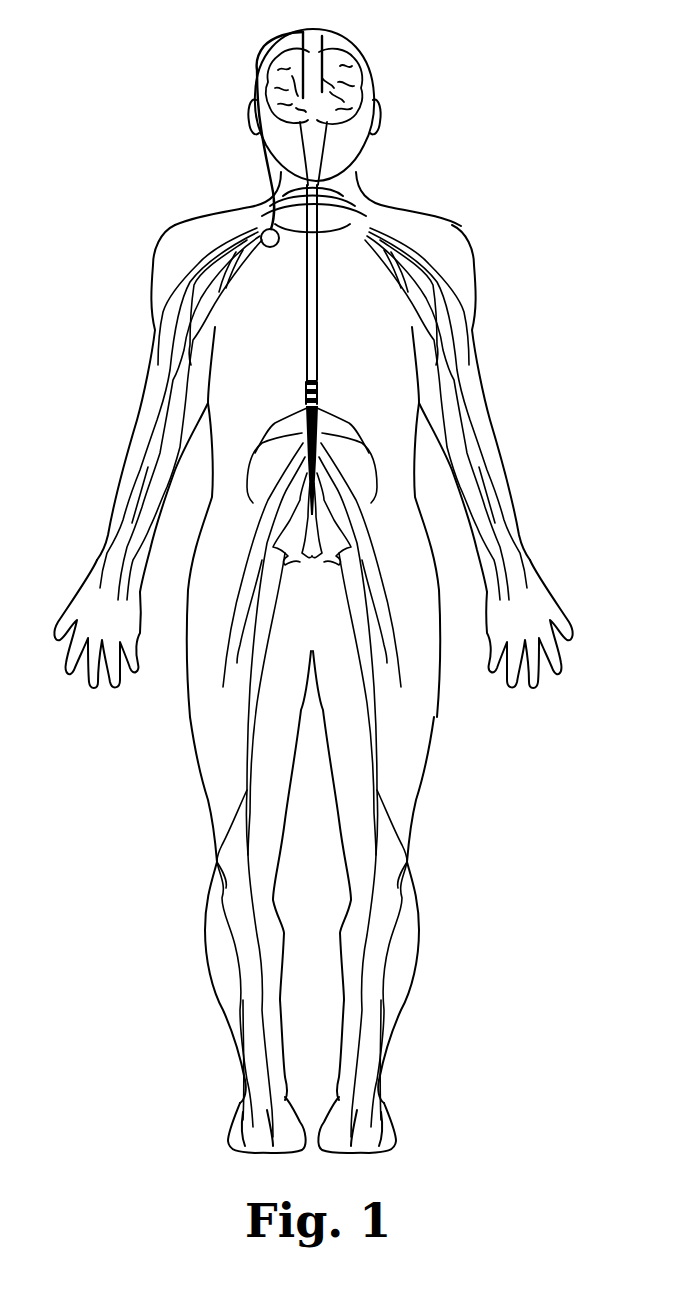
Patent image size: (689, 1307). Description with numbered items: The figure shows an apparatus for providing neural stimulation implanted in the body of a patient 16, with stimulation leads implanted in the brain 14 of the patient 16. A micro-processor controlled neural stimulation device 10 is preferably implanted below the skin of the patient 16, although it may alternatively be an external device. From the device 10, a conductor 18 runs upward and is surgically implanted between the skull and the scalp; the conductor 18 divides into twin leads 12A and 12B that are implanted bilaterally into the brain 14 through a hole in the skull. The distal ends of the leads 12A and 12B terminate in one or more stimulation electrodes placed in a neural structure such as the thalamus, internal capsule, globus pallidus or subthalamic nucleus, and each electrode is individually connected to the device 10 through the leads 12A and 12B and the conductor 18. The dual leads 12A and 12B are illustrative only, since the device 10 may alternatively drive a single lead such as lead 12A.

The neural stimulation device 10 is at (262, 233).
The lead 12A is at (268, 54).
The lead 12B is at (327, 50).
The brain 14 is at (347, 68).
The patient 16 is at (481, 346).
The conductor 18 is at (266, 146).